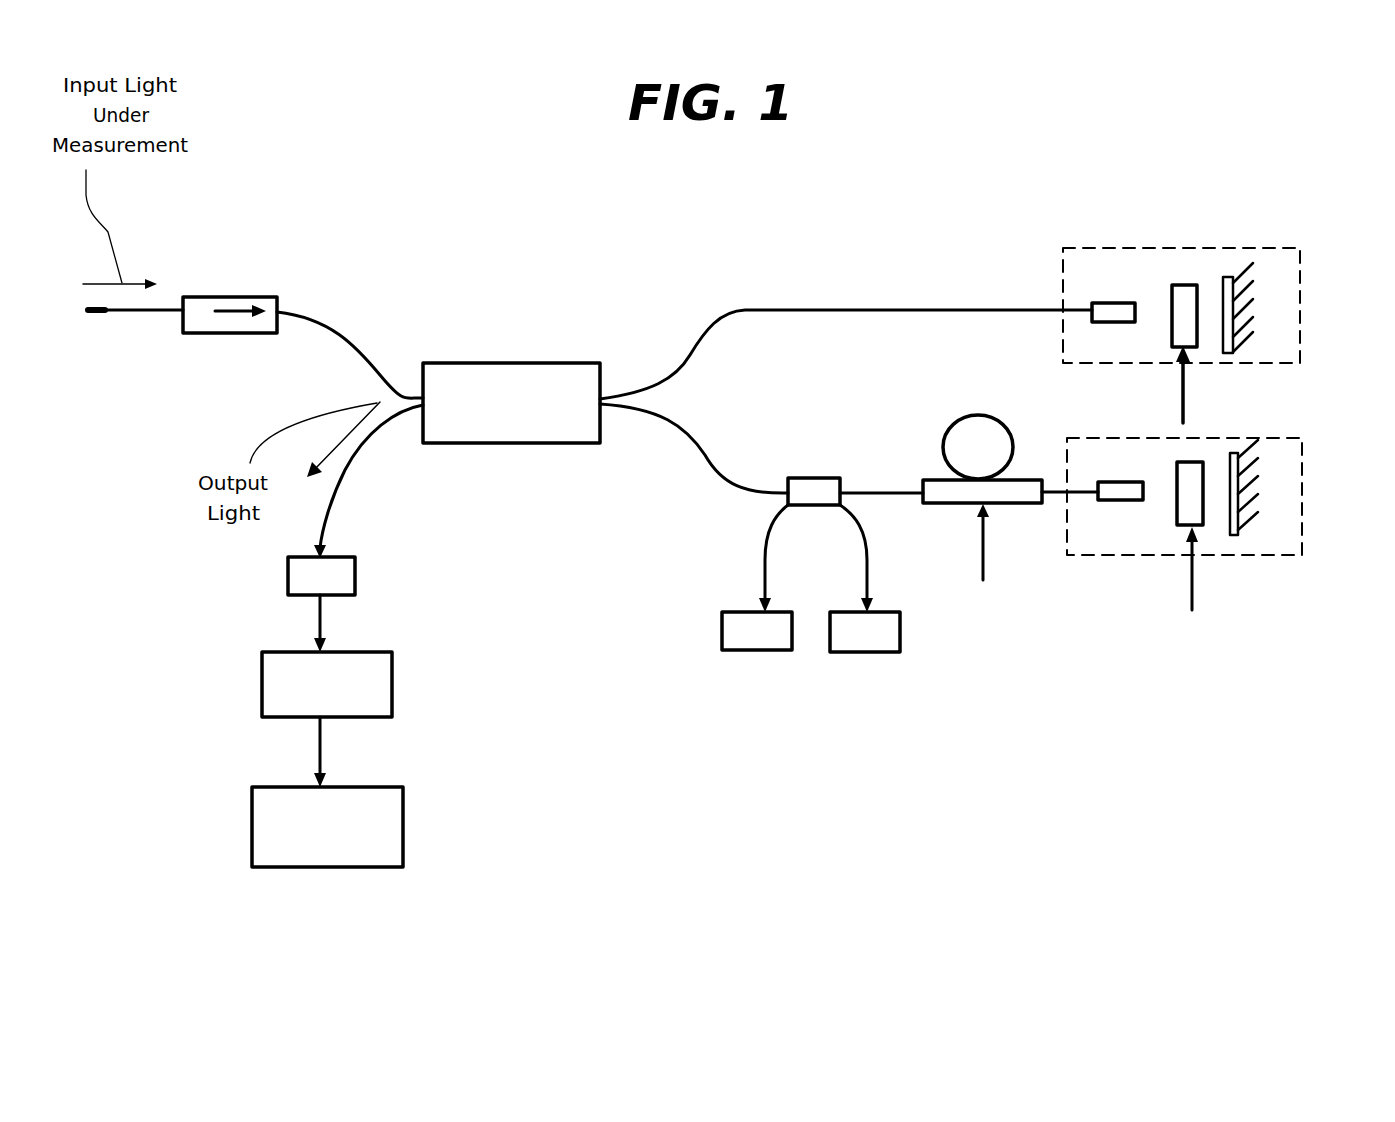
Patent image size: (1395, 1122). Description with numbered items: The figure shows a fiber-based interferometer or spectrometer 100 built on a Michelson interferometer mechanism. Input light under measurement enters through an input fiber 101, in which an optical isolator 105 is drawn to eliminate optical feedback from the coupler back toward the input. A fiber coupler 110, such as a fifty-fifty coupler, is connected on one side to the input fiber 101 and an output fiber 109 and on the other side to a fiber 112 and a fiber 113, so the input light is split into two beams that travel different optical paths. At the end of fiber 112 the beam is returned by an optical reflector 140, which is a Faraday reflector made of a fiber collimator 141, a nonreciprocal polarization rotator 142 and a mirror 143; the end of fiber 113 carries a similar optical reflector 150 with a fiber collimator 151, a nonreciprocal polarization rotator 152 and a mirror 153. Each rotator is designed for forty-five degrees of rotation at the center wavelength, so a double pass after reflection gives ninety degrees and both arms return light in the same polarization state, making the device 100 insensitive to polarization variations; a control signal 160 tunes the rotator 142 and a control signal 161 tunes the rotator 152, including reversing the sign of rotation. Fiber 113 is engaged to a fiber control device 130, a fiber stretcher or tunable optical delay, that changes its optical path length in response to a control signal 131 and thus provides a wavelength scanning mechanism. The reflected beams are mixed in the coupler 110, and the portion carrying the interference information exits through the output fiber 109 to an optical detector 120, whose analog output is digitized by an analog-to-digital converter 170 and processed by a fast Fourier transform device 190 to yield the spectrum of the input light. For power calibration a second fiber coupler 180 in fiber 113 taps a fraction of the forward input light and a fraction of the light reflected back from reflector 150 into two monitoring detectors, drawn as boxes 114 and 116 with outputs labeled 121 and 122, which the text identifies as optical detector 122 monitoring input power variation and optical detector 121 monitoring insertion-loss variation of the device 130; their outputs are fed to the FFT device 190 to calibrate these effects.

The fiber-based interferometer or spectrometer 100 is at (373, 186).
The input fiber 101 is at (343, 340).
The optical isolator 105 is at (257, 297).
The output fiber 109 is at (373, 432).
The fiber coupler 110 is at (523, 363).
The fiber 112 is at (683, 370).
The fiber 113 is at (677, 427).
The first photodetector 114 is at (755, 535).
The second photodetector 116 is at (870, 558).
The optical detector 120 is at (355, 563).
The optical detector 121 is at (735, 650).
The optical detector 122 is at (880, 653).
The fiber control device 130 is at (1027, 477).
The control signal 131 is at (983, 560).
The optical reflector 140 is at (1300, 293).
The fiber collimator 141 is at (1118, 303).
The nonreciprocal polarization rotator 142 is at (1188, 285).
The mirror 143 is at (1230, 278).
The optical reflector 150 is at (1303, 468).
The fiber collimator 151 is at (1123, 500).
The nonreciprocal polarization rotator 152 is at (1200, 520).
The mirror 153 is at (1233, 537).
The control signal 160 is at (1183, 382).
The control signal 161 is at (1187, 587).
The analog-to-digital converter 170 is at (392, 708).
The fiber coupler 180 is at (810, 478).
The fast Fourier transform device 190 is at (403, 853).